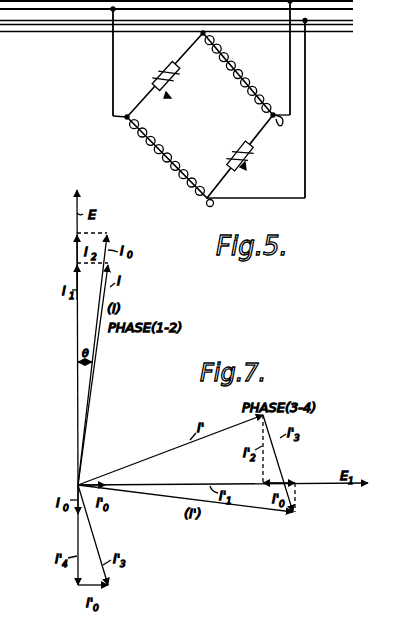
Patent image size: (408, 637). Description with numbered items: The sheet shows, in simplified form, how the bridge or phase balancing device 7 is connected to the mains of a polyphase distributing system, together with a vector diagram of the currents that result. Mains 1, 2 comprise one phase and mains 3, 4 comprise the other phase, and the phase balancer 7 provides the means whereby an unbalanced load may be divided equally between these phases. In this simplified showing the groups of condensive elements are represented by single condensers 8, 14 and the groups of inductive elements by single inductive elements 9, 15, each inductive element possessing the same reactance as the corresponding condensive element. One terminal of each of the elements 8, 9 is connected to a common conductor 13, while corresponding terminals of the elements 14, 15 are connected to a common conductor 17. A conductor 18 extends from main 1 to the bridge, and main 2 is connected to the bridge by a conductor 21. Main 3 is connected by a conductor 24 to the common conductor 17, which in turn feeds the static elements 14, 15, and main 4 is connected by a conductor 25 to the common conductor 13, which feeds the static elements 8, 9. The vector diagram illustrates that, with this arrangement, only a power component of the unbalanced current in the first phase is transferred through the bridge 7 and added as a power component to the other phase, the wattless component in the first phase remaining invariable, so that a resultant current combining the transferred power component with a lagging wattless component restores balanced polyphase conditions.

The main 1 is at (19, 32).
The main 2 is at (40, 24).
The main 3 is at (62, 9).
The main 4 is at (82, 1).
The phase balancer 7 is at (204, 119).
The condensive element 8 is at (250, 147).
The inductive element 9 is at (241, 73).
The common conductor 13 is at (271, 115).
The condensive element 14 is at (156, 80).
The inductive element 15 is at (163, 150).
The common conductor 17 is at (136, 118).
The conductor 18 is at (207, 36).
The conductor 21 is at (306, 70).
The conductor 24 is at (112, 100).
The conductor 25 is at (289, 37).